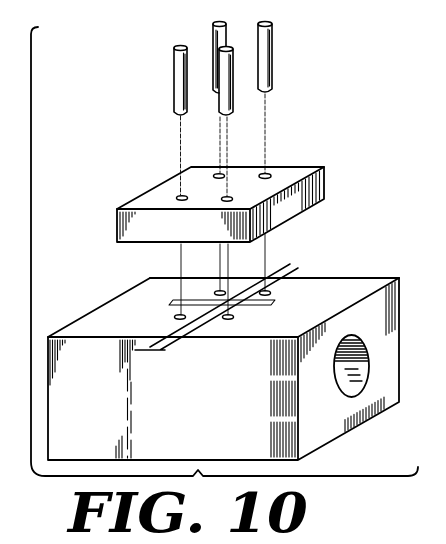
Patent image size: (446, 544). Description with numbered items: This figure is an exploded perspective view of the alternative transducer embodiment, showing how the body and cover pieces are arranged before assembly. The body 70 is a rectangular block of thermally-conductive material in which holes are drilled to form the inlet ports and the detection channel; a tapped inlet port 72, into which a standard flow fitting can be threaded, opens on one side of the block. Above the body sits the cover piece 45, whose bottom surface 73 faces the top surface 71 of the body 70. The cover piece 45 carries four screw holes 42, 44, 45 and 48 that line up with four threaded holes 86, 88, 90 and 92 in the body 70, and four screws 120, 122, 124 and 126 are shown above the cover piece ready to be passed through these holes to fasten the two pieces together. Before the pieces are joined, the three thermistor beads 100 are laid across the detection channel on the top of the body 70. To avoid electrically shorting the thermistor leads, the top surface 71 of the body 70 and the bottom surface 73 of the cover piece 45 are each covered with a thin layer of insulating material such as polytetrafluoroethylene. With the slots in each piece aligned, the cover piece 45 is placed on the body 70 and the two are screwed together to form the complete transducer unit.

The alignment pin 120 is at (174, 63).
The alignment pin 122 is at (213, 32).
The alignment pin 124 is at (272, 42).
The alignment pin 126 is at (233, 106).
The bottom surface of cover piece 73 is at (300, 213).
The screw hole in cover piece 42 is at (216, 175).
The screw hole in cover piece 44 is at (269, 175).
The cover piece 45 is at (178, 197).
The screw hole in cover piece 48 is at (229, 197).
The body 70 is at (333, 422).
The top surface of block 71 is at (323, 278).
The inlet port 72 is at (370, 364).
The threaded hole in body 86 is at (216, 293).
The threaded hole in body 88 is at (270, 293).
The threaded hole in body 90 is at (175, 318).
The threaded hole in body 92 is at (233, 318).
The thermistor beads 100 is at (144, 353).